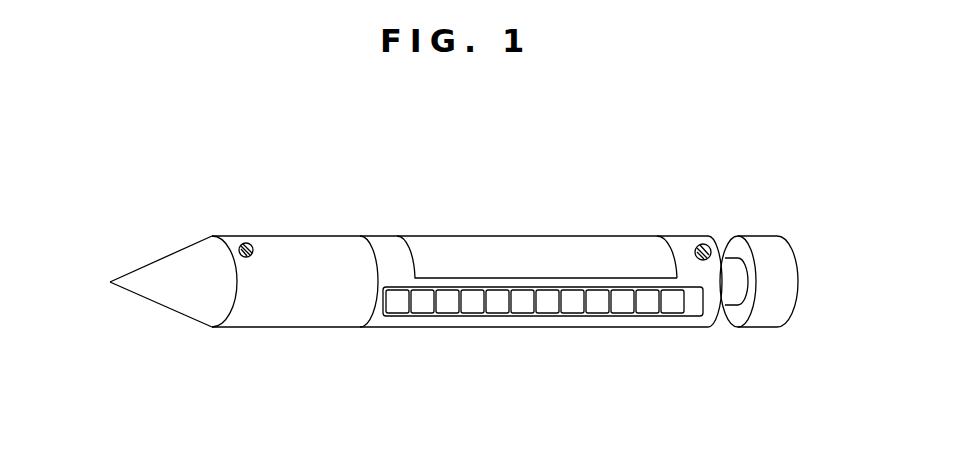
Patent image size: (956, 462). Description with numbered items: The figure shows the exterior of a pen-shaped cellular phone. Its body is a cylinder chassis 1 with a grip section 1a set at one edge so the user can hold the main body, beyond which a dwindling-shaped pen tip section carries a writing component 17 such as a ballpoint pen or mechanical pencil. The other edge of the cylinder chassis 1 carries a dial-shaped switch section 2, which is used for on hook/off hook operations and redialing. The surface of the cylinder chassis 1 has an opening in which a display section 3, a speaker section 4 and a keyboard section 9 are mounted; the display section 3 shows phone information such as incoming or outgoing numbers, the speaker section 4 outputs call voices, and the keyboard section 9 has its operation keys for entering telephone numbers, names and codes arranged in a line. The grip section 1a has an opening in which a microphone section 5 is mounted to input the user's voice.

The cylinder chassis 1 is at (409, 302).
The grip section 1a is at (307, 318).
The writing component 17 is at (111, 281).
The microphone section 5 is at (246, 242).
The display section 3 is at (497, 252).
The keyboard section 9 is at (543, 318).
The sound output section 4 is at (704, 243).
The dial-shaped switch section 2 is at (753, 236).